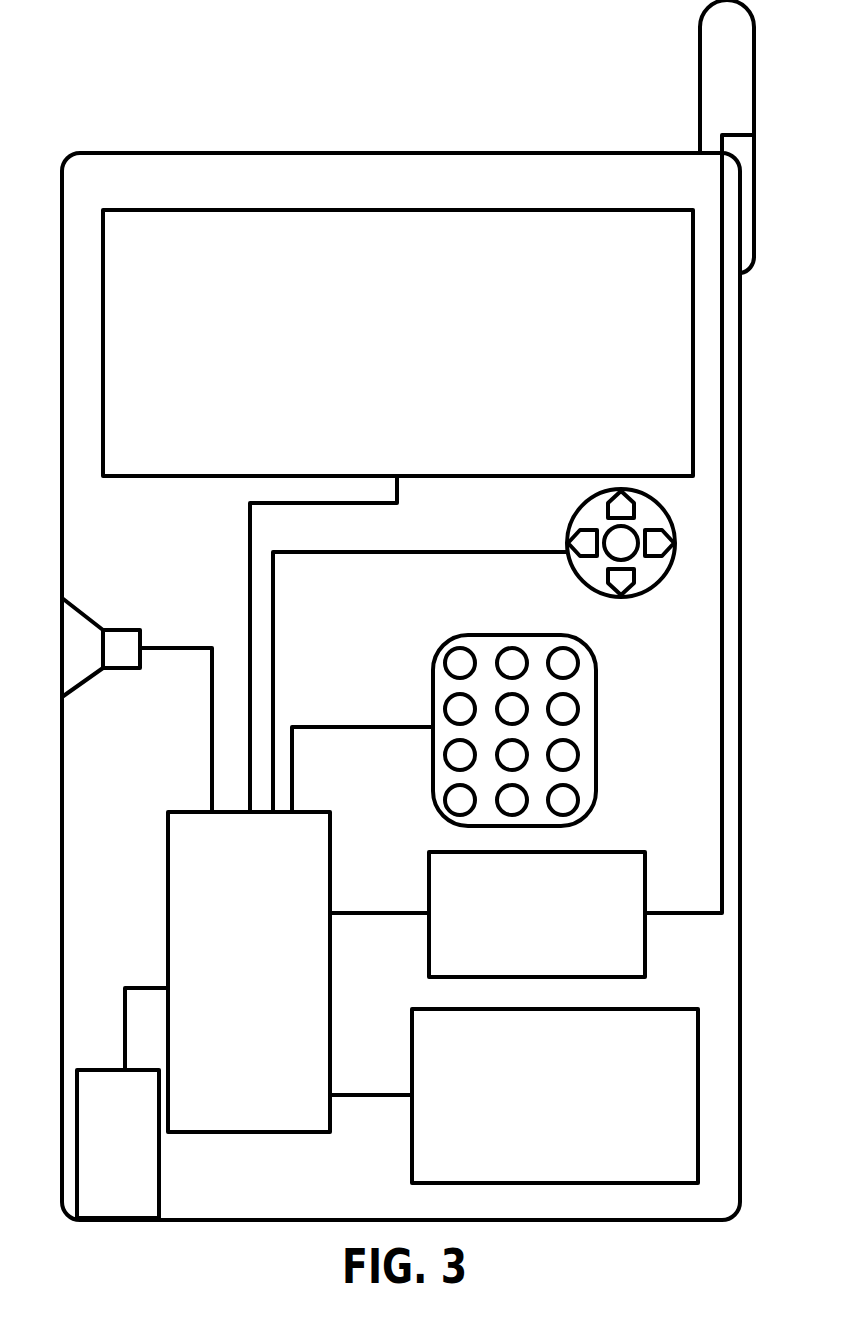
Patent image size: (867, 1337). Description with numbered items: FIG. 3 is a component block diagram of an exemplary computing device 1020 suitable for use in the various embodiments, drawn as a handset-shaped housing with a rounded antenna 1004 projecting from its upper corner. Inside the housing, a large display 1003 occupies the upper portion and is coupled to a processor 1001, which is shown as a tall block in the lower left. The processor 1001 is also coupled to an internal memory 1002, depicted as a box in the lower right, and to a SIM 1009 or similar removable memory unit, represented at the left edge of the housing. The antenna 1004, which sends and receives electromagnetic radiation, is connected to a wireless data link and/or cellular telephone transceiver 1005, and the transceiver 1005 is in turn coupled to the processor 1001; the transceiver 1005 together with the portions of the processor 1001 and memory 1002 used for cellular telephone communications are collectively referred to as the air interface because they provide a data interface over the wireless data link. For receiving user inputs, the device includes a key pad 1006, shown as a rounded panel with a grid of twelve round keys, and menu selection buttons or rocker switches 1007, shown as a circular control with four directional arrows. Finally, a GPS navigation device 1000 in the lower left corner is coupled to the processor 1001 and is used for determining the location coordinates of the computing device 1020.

The GPS navigation device 1000 is at (145, 1155).
The processor 1001 is at (285, 983).
The internal memory 1002 is at (580, 1108).
The display 1003 is at (405, 344).
The antenna 1004 is at (699, 30).
The cellular telephone transceiver 1005 is at (563, 925).
The key pad 1006 is at (596, 726).
The menu selection buttons or rocker switches 1007 is at (621, 597).
The SIM 1009 is at (103, 630).
The computing device 1020 is at (401, 156).